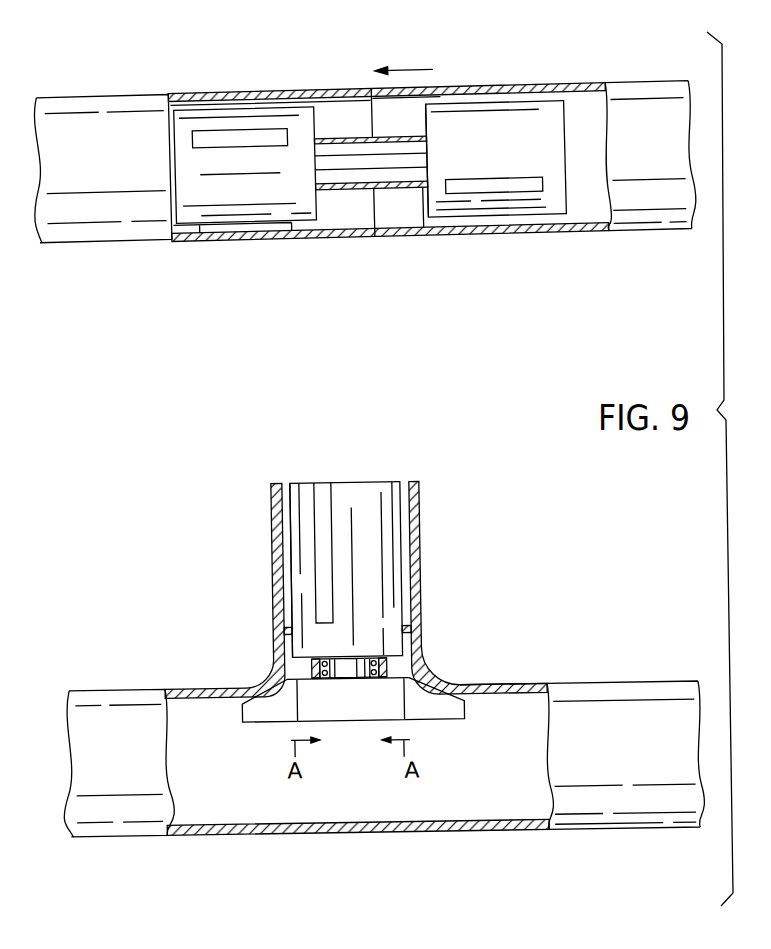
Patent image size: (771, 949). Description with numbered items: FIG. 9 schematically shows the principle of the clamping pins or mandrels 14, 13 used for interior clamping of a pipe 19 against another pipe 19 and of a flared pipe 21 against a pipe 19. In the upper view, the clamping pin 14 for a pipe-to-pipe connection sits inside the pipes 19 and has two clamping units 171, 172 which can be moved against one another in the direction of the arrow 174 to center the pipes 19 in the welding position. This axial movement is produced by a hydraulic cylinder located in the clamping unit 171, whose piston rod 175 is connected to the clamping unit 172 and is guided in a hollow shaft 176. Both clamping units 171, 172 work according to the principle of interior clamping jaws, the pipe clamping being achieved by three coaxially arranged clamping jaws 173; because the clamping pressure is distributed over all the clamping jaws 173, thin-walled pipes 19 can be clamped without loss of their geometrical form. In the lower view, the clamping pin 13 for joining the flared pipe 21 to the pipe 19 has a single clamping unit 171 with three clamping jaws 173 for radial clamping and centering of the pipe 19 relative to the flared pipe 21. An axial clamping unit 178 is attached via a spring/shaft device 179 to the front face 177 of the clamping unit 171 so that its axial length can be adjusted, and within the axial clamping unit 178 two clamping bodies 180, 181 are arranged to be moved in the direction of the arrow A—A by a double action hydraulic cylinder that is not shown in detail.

The clamping pin 13 is at (299, 612).
The clamping pin 14 is at (558, 145).
The pipe 19 is at (288, 92).
The flared pipe 21 is at (503, 687).
The clamping unit 171 is at (207, 155).
The clamping unit 172 is at (547, 122).
The clamping jaws 173 is at (522, 101).
The arrow 174 is at (408, 70).
The piston rod 175 is at (388, 160).
The hollow shaft 176 is at (421, 191).
The front face 177 is at (351, 658).
The axial clamping unit 178 is at (375, 705).
The spring/shaft device 179 is at (367, 677).
The clamping body 180 is at (263, 708).
The clamping body 181 is at (452, 719).